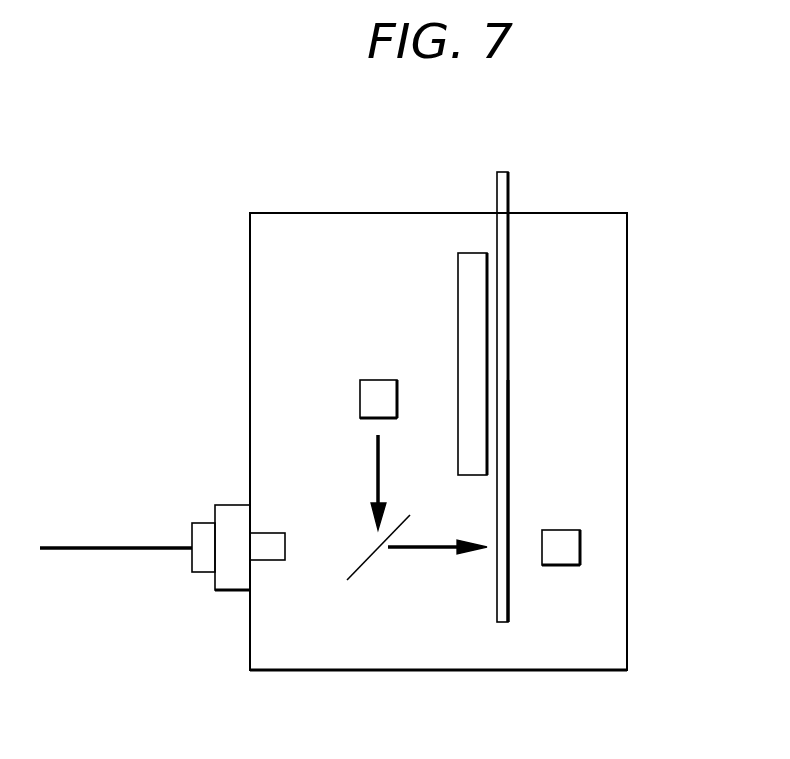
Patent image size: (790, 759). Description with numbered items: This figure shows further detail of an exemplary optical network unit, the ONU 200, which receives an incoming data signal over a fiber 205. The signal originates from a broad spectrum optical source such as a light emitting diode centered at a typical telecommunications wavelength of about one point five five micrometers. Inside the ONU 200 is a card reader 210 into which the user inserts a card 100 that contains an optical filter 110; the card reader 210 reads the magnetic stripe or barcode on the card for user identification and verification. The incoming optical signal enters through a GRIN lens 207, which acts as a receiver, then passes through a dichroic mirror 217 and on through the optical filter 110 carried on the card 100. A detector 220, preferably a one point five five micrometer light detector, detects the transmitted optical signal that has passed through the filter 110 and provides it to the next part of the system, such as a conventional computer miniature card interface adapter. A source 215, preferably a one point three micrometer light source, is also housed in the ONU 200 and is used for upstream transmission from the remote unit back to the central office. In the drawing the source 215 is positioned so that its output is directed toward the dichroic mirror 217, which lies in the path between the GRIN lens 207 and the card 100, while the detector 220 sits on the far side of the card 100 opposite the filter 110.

The card 100 is at (507, 172).
The optical filter 110 is at (509, 392).
The optical network unit 200 is at (627, 288).
The fiber 205 is at (100, 547).
The GRIN lens 207 is at (270, 560).
The card reader 210 is at (458, 273).
The source 215 is at (217, 357).
The dichroic mirror 217 is at (358, 568).
The detector 220 is at (580, 545).